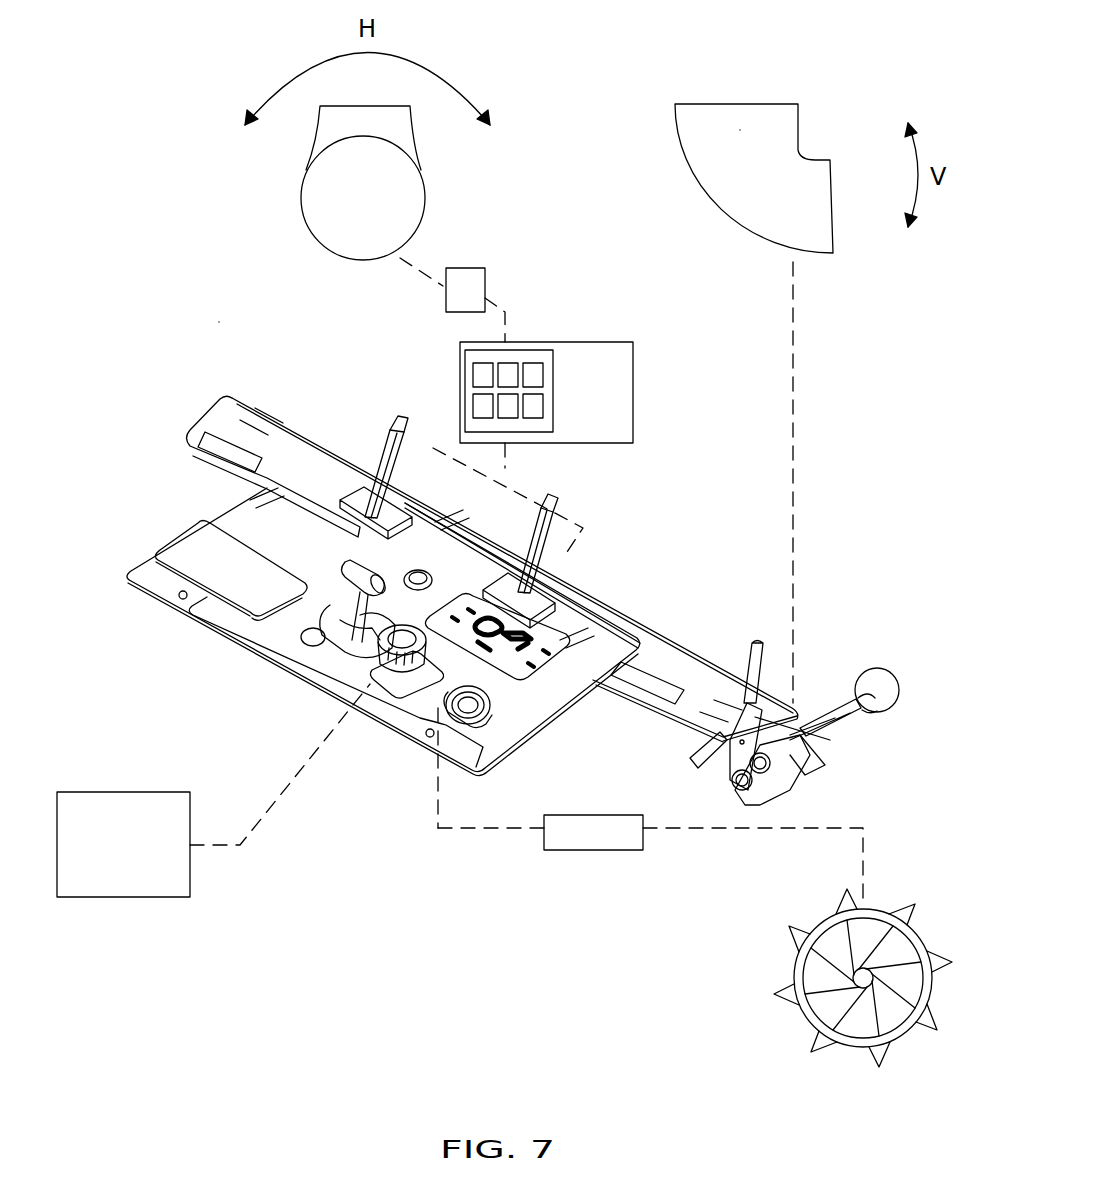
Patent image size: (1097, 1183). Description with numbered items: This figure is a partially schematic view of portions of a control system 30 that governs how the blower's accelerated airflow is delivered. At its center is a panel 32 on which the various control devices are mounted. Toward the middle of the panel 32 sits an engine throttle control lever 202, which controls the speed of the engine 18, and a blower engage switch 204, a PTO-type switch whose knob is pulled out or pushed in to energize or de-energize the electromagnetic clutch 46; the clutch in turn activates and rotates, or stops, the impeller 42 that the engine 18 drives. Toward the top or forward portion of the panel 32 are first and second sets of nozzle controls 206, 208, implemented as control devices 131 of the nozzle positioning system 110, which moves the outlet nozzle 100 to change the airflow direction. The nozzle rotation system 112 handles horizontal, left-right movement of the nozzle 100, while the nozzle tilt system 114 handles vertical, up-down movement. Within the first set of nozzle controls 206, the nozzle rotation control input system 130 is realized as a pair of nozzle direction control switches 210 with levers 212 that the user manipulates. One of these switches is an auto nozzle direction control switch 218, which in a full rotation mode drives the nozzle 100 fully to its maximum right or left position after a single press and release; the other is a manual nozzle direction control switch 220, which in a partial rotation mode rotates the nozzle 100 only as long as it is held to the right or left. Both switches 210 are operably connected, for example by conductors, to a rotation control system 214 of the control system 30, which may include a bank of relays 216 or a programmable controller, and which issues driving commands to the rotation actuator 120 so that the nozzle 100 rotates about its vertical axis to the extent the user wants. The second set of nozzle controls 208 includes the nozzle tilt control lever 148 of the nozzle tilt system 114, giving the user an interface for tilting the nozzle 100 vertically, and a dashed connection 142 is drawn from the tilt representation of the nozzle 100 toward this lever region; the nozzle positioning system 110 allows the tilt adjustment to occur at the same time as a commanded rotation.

The engine 18 is at (136, 863).
The control system 30 is at (145, 497).
The panel 32 is at (177, 523).
The impeller 42 is at (906, 946).
The electromagnetic clutch 46 is at (606, 830).
The outlet nozzle 100 is at (414, 228).
The nozzle positioning system 110 is at (213, 324).
The nozzle rotation system 112 is at (272, 208).
The nozzle tilt system 114 is at (668, 214).
The rotation actuator 120 is at (470, 284).
The nozzle rotation control input system 130 is at (630, 536).
The control device 131 is at (383, 410).
The wheel drive connection 142 is at (797, 392).
The nozzle tilt control lever 148 is at (899, 704).
The engine throttle control lever 202 is at (346, 606).
The blower engage switch 204 is at (390, 666).
The first set of nozzle controls 206 is at (398, 412).
The second set of nozzle controls 208 is at (887, 647).
The nozzle direction control switches 210 is at (398, 500).
The levers 212 is at (386, 446).
The rotation control system 214 is at (642, 386).
The bank of relays 216 is at (532, 402).
The auto nozzle direction control switch 218 is at (357, 493).
The manual nozzle direction control switch 220 is at (565, 586).